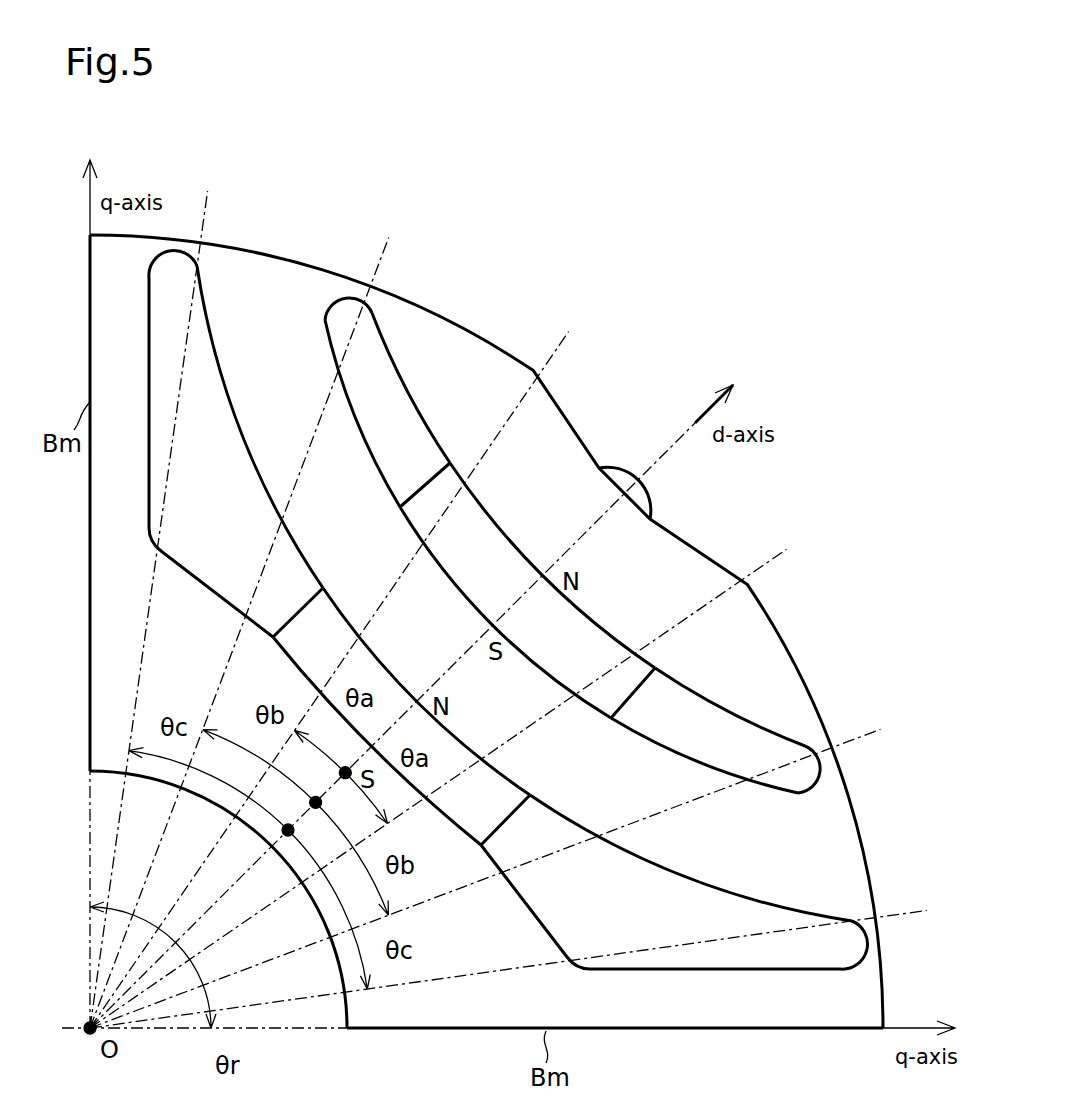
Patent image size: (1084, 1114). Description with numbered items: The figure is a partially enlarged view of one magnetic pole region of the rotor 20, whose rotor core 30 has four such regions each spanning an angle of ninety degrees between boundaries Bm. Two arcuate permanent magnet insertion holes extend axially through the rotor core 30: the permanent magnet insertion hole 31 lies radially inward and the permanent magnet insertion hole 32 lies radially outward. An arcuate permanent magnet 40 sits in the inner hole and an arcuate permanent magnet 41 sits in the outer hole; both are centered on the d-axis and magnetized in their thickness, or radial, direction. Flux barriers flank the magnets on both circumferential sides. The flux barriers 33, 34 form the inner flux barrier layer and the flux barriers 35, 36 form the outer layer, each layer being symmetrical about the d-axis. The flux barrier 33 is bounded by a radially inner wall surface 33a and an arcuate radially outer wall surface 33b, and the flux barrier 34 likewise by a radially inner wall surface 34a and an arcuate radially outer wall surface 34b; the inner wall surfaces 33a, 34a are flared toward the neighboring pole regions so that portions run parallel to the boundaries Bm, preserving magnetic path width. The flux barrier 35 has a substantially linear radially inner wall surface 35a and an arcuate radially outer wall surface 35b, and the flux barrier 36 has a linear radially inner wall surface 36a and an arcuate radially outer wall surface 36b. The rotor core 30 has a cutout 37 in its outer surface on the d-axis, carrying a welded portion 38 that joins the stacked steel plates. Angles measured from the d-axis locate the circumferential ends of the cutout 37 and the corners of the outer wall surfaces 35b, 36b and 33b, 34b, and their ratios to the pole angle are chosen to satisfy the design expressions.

The rotor 20 is at (346, 1014).
The rotor core 30 is at (90, 776).
The permanent magnet insertion hole 31 is at (465, 823).
The permanent magnet insertion hole 32 is at (544, 657).
The flux barrier 33 is at (202, 573).
The radially inner wall surface 33a is at (151, 330).
The radially outer wall surface 33b is at (235, 416).
The flux barrier 34 is at (544, 928).
The radially inner wall surface 34a is at (702, 971).
The radially outer wall surface 34b is at (722, 897).
The flux barrier 35 is at (370, 425).
The radially inner wall surface 35a is at (331, 322).
The radially outer wall surface 35b is at (408, 396).
The flux barrier 36 is at (690, 750).
The radially inner wall surface 36a is at (785, 787).
The radially outer wall surface 36b is at (700, 707).
The cutout 37 is at (717, 567).
The welded portion 38 is at (622, 470).
The permanent magnet 40 is at (326, 622).
The permanent magnet 41 is at (476, 525).